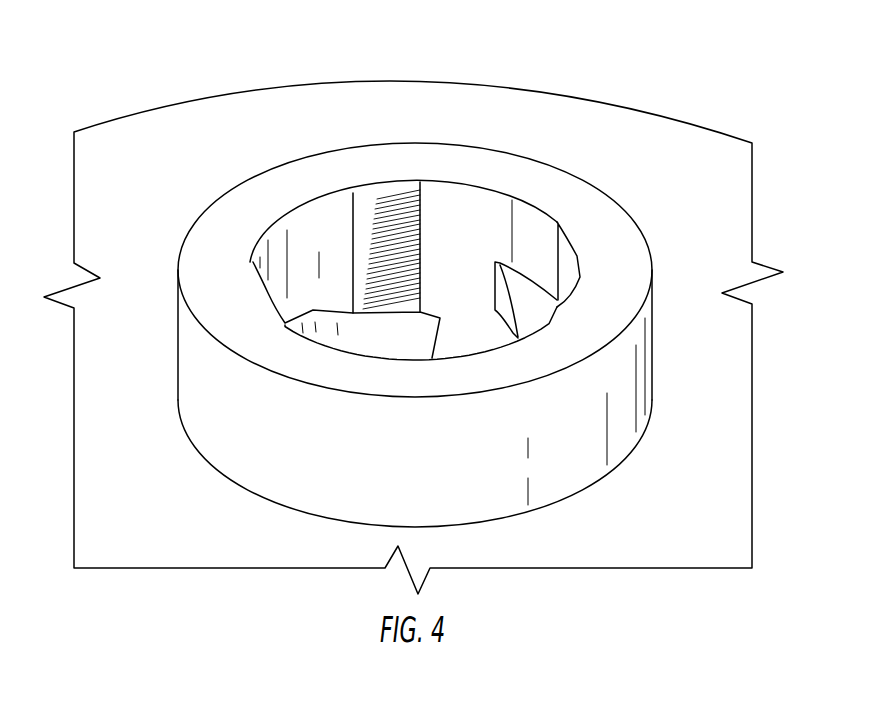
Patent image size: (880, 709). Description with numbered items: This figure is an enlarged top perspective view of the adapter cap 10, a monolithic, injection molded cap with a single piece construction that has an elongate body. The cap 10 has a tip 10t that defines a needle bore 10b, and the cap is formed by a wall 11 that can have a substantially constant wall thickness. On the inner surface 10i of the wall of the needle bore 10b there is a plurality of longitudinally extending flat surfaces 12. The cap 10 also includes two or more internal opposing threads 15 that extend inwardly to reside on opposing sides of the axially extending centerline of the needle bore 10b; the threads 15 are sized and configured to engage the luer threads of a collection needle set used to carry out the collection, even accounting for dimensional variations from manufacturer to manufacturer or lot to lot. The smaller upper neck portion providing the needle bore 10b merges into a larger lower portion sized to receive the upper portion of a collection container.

The adapter cap 10 is at (549, 78).
The tip 10t is at (707, 181).
The inner surface 10i is at (317, 238).
The needle bore 10b is at (462, 227).
The wall 11 is at (210, 377).
The flat surfaces 12 is at (381, 185).
The internal opposing threads 15 is at (783, 328).